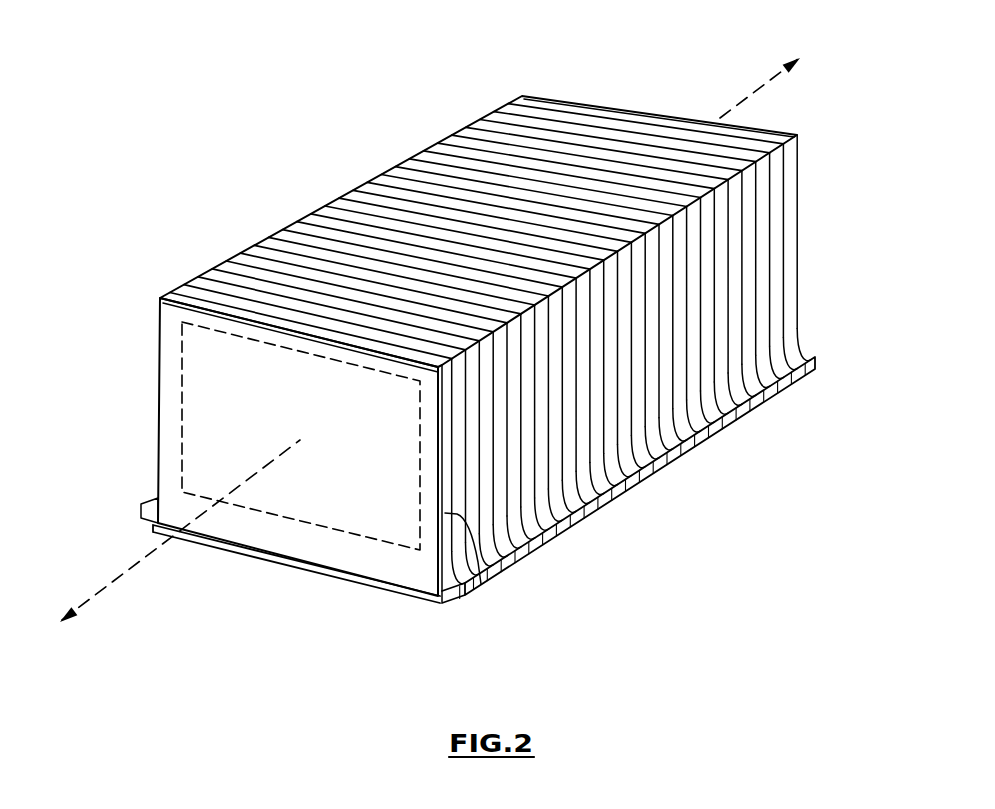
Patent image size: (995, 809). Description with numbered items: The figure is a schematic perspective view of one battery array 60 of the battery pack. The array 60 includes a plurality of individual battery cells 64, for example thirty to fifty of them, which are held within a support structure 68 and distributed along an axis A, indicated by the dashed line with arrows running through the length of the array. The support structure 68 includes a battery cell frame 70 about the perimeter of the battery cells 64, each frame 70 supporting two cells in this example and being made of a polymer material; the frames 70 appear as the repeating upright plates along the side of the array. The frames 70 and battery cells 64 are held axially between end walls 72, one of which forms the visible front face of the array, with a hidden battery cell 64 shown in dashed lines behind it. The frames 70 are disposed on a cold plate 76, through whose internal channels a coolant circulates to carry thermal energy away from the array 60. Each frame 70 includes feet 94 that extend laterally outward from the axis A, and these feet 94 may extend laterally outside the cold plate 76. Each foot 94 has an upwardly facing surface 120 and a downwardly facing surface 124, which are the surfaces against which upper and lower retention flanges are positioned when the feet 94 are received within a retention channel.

The array 60 is at (500, 335).
The battery cell 64 is at (300, 495).
The support structure 68 is at (277, 243).
The battery cell frame 70 is at (481, 584).
The end wall 72 is at (347, 555).
The cold plate 76 is at (417, 593).
The foot 94 is at (587, 495).
The upwardly facing surface 120 is at (650, 449).
The downwardly facing surface 124 is at (455, 599).
The axis A is at (133, 568).